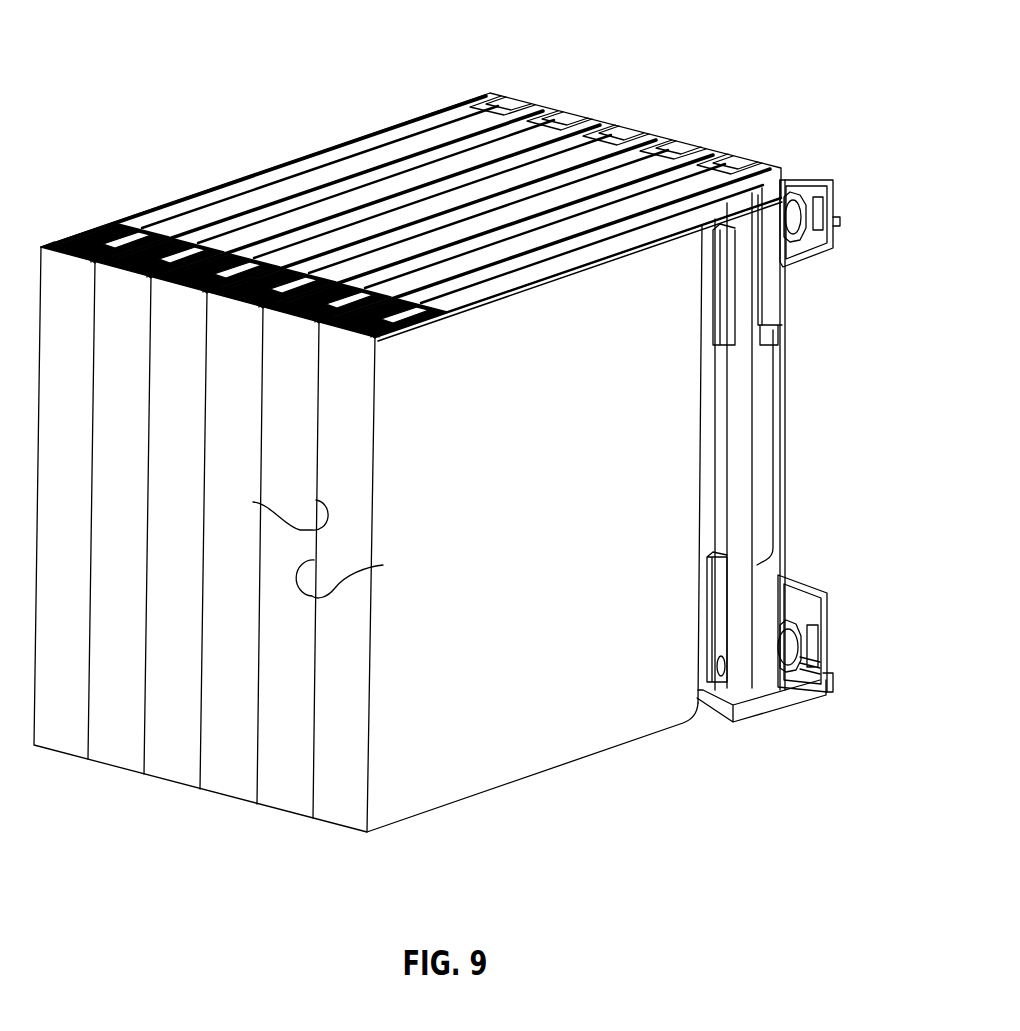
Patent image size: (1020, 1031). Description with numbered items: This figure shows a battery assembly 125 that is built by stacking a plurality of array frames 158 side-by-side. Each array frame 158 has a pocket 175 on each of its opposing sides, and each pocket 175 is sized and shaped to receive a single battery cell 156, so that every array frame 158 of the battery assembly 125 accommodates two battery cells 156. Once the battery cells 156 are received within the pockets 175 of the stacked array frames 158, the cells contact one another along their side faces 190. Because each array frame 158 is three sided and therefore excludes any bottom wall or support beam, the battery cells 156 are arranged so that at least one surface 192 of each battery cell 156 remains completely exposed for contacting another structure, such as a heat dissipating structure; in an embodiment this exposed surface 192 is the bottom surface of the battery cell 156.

The battery assembly 125 is at (450, 456).
The battery cell 156 is at (657, 372).
The array frame 158 is at (780, 170).
The pocket 175 is at (734, 650).
The side face 190 is at (254, 502).
The surface 192 is at (50, 752).